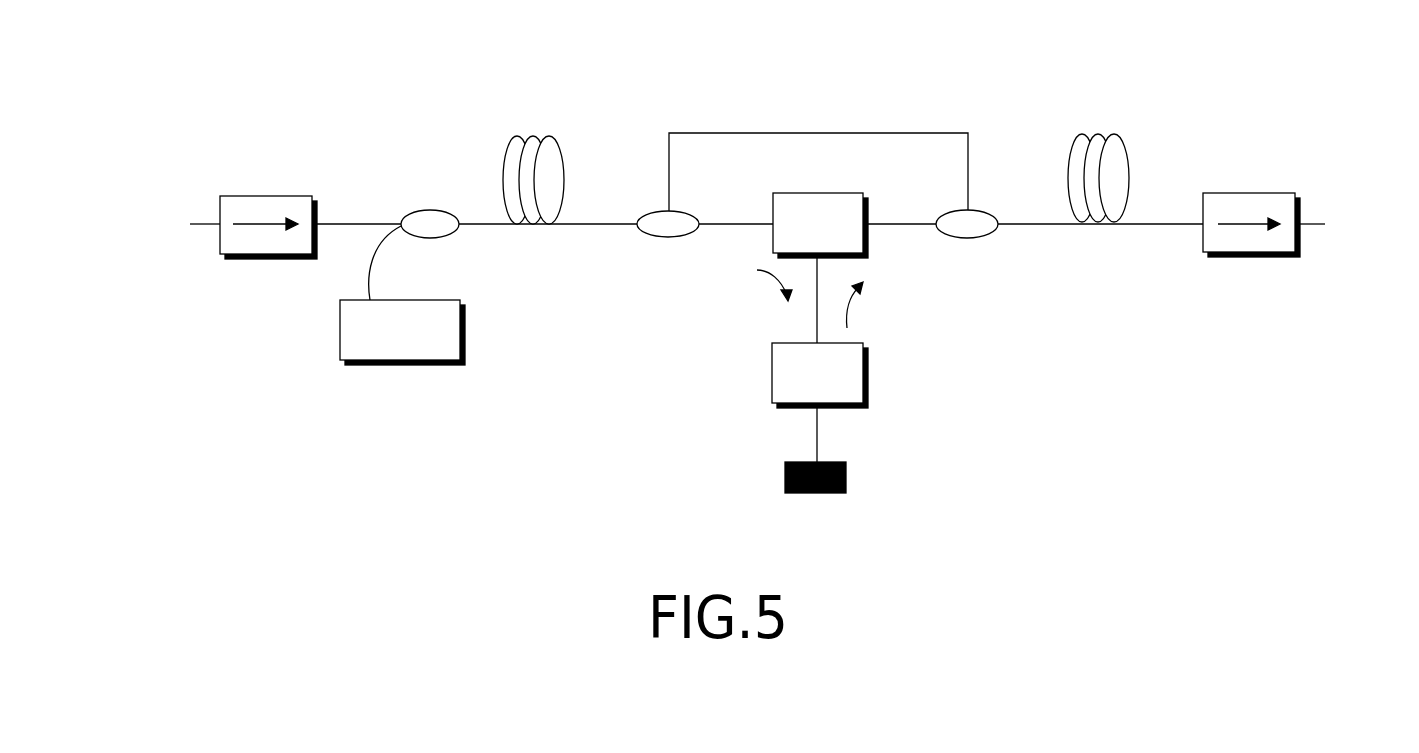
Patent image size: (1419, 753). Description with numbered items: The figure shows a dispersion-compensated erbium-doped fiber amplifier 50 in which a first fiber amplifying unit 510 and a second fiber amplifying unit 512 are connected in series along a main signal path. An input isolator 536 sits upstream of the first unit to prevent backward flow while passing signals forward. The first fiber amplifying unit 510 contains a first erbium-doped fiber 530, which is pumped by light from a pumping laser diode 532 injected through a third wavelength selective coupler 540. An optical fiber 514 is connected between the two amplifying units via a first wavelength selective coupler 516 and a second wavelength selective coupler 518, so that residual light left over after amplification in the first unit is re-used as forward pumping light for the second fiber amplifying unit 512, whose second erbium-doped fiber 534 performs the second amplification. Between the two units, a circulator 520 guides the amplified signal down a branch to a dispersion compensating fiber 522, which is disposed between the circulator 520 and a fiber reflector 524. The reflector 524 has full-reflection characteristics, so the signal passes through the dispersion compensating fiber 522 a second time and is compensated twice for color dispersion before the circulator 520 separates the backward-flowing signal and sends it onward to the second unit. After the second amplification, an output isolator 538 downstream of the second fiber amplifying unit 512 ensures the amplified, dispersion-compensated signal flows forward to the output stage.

The dispersion-compensated erbium-doped fiber amplifier 50 is at (833, 45).
The first fiber amplifying unit 510 is at (503, 137).
The second fiber amplifying unit 512 is at (1070, 132).
The optical fiber 514 is at (818, 133).
The first wavelength selective coupler 516 is at (653, 238).
The second wavelength selective coupler 518 is at (982, 238).
The circulator 520 is at (833, 193).
The dispersion compensating fiber 522 is at (867, 370).
The fiber reflector 524 is at (846, 480).
The first erbium-doped fiber 530 is at (550, 136).
The pumping laser diode 532 is at (398, 360).
The second erbium-doped fiber 534 is at (1120, 135).
The isolator 536 is at (262, 254).
The isolator 538 is at (1250, 257).
The third wavelength selective coupler 540 is at (401, 224).